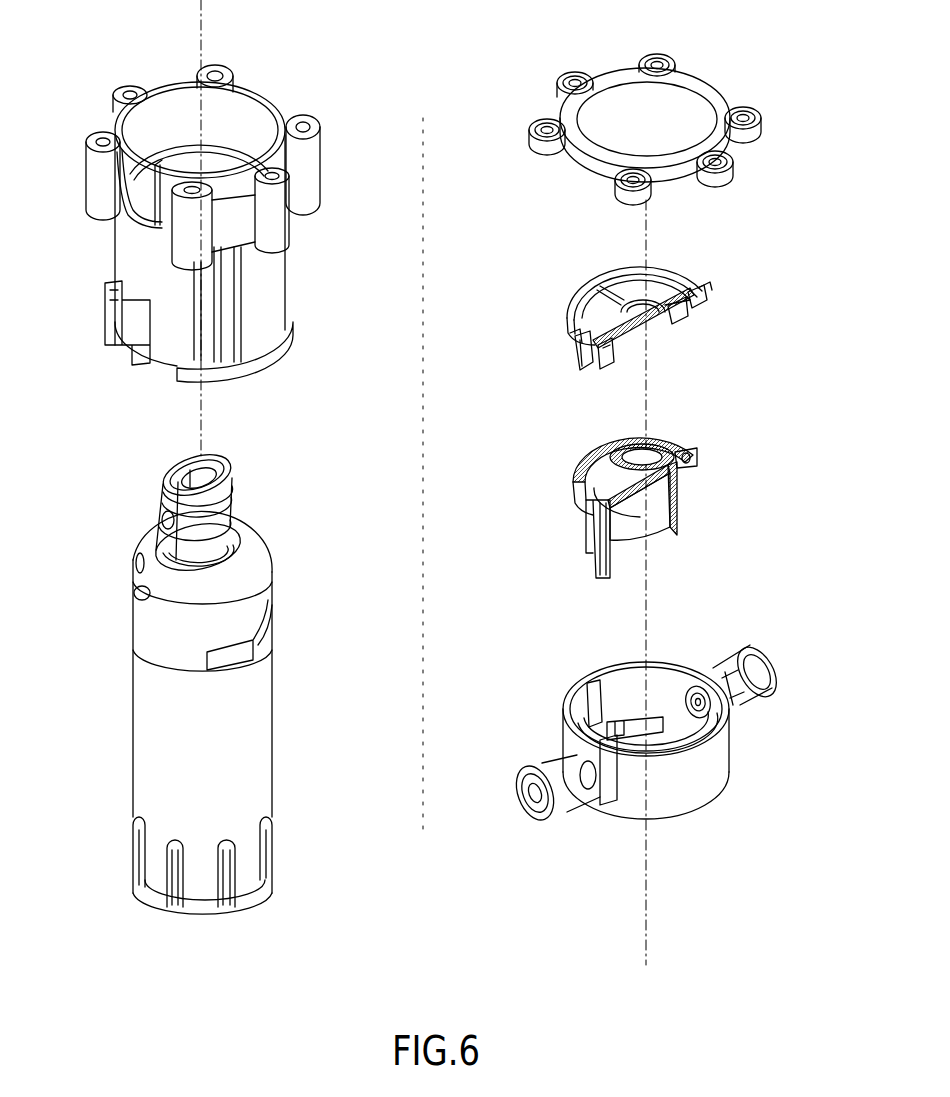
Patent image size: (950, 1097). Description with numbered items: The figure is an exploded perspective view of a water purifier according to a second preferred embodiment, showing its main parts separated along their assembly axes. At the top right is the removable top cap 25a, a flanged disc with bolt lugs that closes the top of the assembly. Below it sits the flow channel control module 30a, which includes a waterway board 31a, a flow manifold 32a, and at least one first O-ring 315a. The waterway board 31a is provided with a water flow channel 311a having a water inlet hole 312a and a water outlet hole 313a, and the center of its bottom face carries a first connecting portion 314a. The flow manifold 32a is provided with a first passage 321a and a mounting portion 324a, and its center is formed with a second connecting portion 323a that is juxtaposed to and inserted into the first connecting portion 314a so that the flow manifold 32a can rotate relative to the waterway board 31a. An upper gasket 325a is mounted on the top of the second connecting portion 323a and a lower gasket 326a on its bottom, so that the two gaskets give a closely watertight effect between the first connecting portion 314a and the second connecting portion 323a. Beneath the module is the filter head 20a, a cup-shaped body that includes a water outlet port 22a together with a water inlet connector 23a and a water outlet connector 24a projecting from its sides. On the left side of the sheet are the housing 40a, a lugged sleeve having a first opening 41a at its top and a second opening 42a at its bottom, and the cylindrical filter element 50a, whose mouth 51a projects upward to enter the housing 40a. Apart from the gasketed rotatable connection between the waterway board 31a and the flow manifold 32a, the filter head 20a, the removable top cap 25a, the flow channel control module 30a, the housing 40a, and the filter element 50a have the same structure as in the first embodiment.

The filter head 20a is at (657, 756).
The water outlet port 22a is at (690, 688).
The water inlet connector 23a is at (550, 773).
The water outlet connector 24a is at (752, 652).
The removable top cap 25a is at (702, 82).
The flow channel control module 30a is at (665, 428).
The waterway board 31a is at (632, 326).
The water flow channel 311a is at (612, 357).
The water inlet hole 312a is at (590, 363).
The water outlet hole 313a is at (705, 305).
The first connecting portion 314a is at (655, 337).
The first O-ring 315a is at (703, 292).
The flow manifold 32a is at (655, 512).
The first passage 321a is at (678, 500).
The second connecting portion 323a is at (719, 459).
The mounting portion 324a is at (640, 537).
The upper gasket 325a is at (657, 442).
The lower gasket 326a is at (582, 463).
The housing 40a is at (183, 231).
The first opening 41a is at (195, 163).
The second opening 42a is at (247, 382).
The filter element 50a is at (170, 680).
The mouth 51a is at (162, 483).